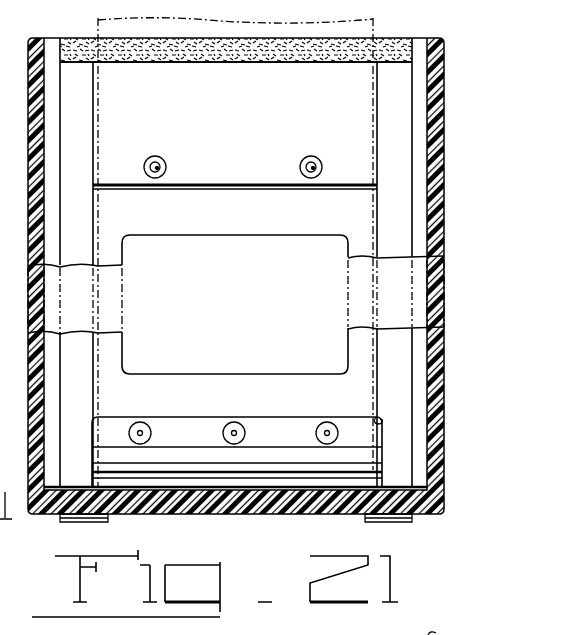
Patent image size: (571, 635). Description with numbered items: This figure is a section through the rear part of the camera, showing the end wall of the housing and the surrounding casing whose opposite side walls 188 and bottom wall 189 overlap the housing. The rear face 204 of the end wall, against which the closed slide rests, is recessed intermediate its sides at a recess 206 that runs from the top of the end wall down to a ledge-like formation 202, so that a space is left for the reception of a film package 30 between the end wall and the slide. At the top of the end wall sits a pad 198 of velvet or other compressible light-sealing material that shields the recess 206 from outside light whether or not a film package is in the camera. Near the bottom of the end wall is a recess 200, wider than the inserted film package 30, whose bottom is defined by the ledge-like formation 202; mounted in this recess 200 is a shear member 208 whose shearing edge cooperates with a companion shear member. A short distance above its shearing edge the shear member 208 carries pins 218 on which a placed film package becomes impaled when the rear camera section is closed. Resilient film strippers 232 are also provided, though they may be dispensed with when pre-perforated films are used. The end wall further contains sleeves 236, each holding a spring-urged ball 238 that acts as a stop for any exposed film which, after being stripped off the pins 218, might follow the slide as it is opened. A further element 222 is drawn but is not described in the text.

The film package 30 is at (376, 30).
The side walls 188 is at (437, 215).
The bottom wall 189 is at (309, 505).
The pad 198 is at (177, 62).
The recess 200 is at (385, 425).
The ledge-like formation 202 is at (380, 470).
The rear face 204 is at (75, 122).
The recess 206 is at (93, 150).
The shear member 208 is at (296, 428).
The pins 218 is at (236, 432).
The bottom plate 222 is at (380, 487).
The resilient film strippers 232 is at (143, 430).
The sleeves 236 is at (166, 165).
The spring-urged ball 238 is at (157, 162).